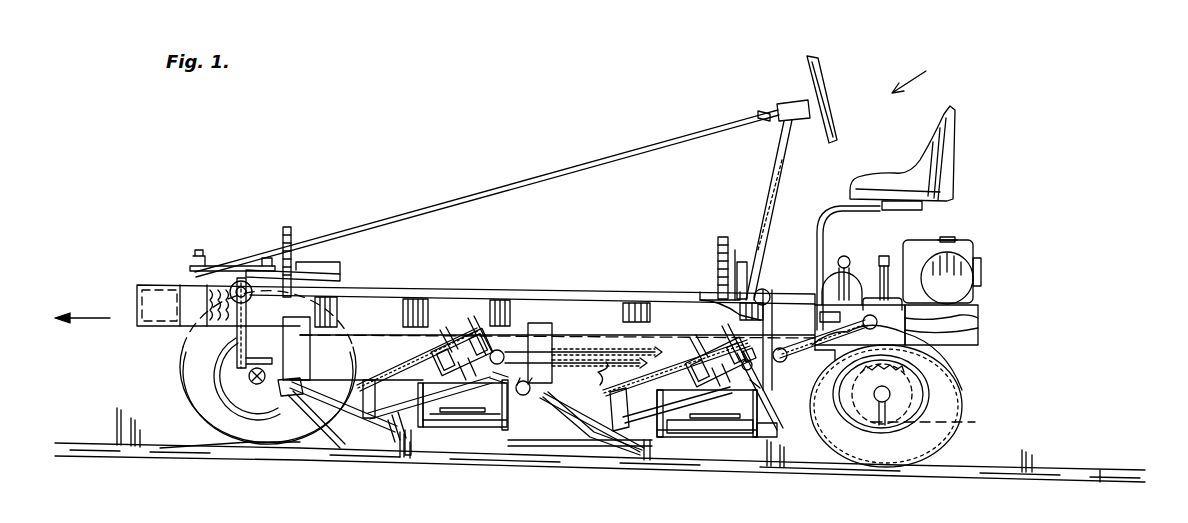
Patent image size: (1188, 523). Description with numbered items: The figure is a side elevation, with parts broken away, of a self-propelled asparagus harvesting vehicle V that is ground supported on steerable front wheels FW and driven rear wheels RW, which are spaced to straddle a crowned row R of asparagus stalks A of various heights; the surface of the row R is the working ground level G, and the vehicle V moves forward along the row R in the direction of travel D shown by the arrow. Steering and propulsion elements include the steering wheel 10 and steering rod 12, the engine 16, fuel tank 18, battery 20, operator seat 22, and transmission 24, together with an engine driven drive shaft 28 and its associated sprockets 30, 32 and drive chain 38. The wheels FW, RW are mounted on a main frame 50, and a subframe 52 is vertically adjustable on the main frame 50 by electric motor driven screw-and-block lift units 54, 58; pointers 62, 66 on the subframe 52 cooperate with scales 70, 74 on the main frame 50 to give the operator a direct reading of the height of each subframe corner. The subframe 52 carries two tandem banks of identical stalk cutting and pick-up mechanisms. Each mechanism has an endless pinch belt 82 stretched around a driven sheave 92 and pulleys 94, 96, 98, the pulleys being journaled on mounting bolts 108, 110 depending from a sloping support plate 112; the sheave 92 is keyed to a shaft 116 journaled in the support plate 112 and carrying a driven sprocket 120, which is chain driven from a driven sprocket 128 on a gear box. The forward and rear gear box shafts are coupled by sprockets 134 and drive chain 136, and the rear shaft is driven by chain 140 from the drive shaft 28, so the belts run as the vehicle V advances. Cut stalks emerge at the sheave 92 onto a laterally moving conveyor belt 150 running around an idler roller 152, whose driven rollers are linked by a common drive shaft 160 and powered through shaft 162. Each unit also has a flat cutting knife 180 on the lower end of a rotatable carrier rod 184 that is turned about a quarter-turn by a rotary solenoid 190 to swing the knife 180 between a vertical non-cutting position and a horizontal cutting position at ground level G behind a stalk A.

The steering wheel 10 is at (825, 72).
The steering rod 12 is at (520, 184).
The engine 16 is at (966, 234).
The fuel tank 18 is at (975, 288).
The battery 20 is at (852, 269).
The seat 22 is at (957, 153).
The transmission 24 is at (899, 263).
The drive shaft 28 is at (980, 331).
The sprocket 30 is at (962, 372).
The sprocket 32 is at (874, 432).
The drive chain 38 is at (936, 421).
The main frame 50 is at (352, 291).
The subframe 52 is at (241, 281).
The lift unit 54 is at (223, 342).
The lift unit 58 is at (782, 280).
The pointer 62 is at (302, 272).
The pointer 66 is at (753, 319).
The scale 70 is at (280, 240).
The scale 74 is at (716, 250).
The endless pinch belt 82 is at (440, 364).
The driven sheave 92 is at (484, 390).
The pulley 94 is at (456, 388).
The pulley 96 is at (338, 460).
The pulley 98 is at (390, 447).
The mounting bolt 108 is at (355, 414).
The mounting bolt 110 is at (378, 389).
The support plate 112 is at (398, 370).
The shaft 116 is at (480, 343).
The driven sprocket 120 is at (449, 347).
The driven sprocket 128 is at (744, 348).
The sprocket 134 is at (523, 345).
The drive chain 136 is at (588, 323).
The chain 140 is at (825, 337).
The conveyor belt 150 is at (497, 447).
The idler roller 152 is at (725, 302).
The common drive shaft 160 is at (556, 452).
The shaft 162 is at (764, 393).
The cutting knife 180 is at (412, 459).
The carrier rod 184 is at (305, 449).
The rotary solenoid 190 is at (278, 405).
The asparagus stalk A is at (110, 408).
The direction of travel D is at (98, 313).
The front wheels FW is at (181, 374).
The rear wheels RW is at (964, 397).
The ground level G is at (1077, 464).
The row R is at (1107, 470).
The vehicle V is at (918, 73).